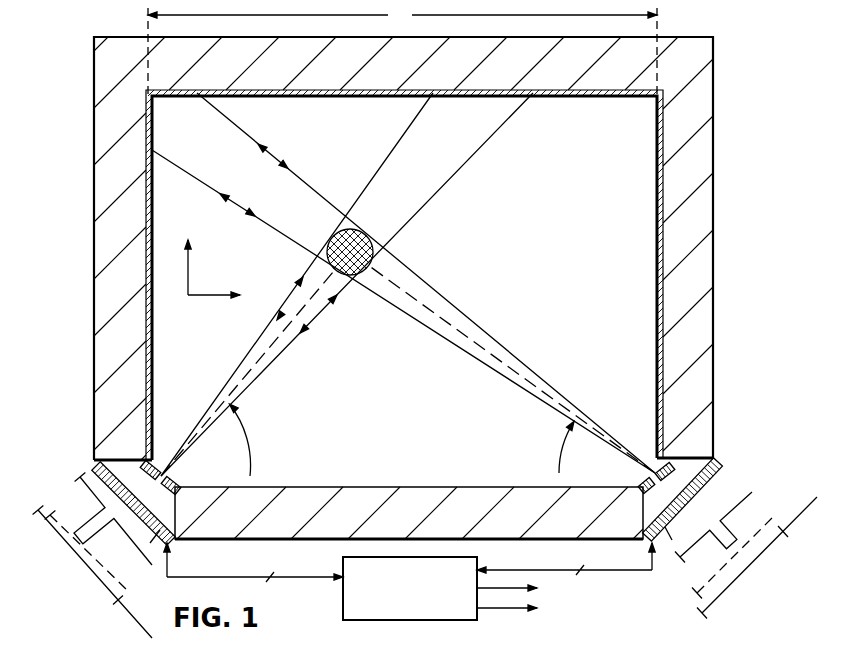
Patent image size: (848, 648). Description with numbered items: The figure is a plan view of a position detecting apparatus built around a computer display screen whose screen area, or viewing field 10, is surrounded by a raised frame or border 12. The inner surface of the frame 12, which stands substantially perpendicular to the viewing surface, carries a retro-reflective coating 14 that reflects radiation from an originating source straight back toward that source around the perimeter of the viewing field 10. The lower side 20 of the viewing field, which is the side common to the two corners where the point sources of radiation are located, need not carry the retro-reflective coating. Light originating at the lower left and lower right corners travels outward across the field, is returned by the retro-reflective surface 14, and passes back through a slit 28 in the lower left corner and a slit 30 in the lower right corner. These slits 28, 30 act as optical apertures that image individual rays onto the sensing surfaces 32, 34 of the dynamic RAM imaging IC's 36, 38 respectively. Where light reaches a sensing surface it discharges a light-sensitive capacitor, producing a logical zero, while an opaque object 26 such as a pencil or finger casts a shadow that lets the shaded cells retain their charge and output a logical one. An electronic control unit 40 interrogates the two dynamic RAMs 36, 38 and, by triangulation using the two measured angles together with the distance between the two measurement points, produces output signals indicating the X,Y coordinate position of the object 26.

The viewing field 10 is at (509, 289).
The frame 12 is at (705, 76).
The retro-reflective coating 14 is at (657, 206).
The common side 20 is at (371, 497).
The object 26 is at (357, 236).
The slit 28 is at (163, 468).
The slit 30 is at (655, 470).
The sensing surface 32 is at (149, 545).
The sensing surface 34 is at (675, 542).
The dynamic RAM imaging IC 36 is at (97, 463).
The dynamic RAM imaging IC 38 is at (722, 463).
The electronic control unit 40 is at (343, 606).